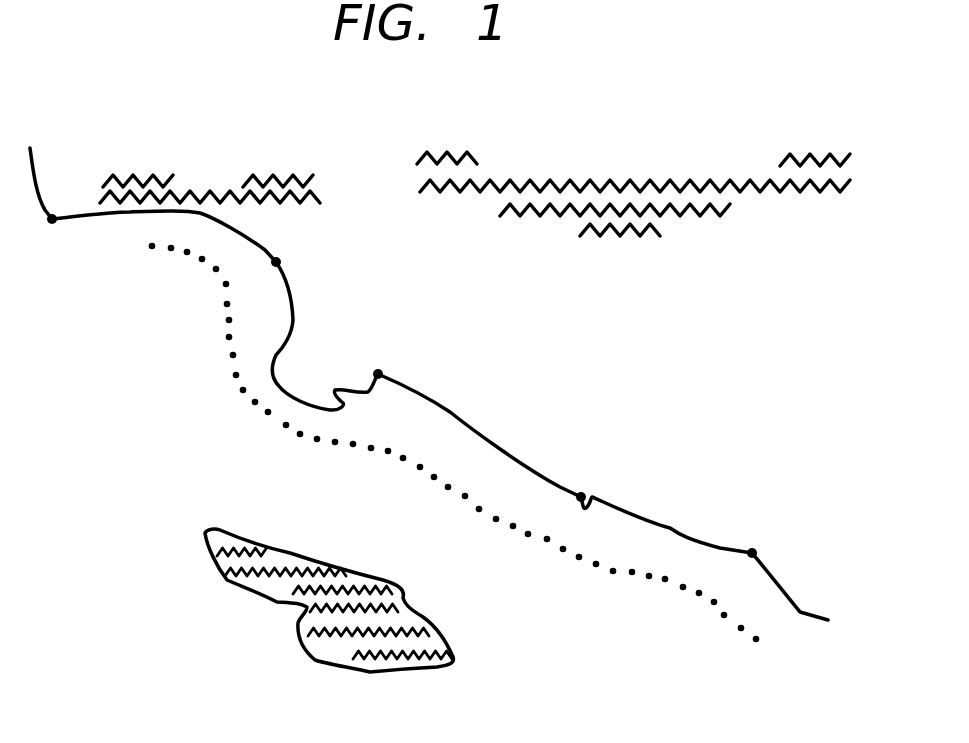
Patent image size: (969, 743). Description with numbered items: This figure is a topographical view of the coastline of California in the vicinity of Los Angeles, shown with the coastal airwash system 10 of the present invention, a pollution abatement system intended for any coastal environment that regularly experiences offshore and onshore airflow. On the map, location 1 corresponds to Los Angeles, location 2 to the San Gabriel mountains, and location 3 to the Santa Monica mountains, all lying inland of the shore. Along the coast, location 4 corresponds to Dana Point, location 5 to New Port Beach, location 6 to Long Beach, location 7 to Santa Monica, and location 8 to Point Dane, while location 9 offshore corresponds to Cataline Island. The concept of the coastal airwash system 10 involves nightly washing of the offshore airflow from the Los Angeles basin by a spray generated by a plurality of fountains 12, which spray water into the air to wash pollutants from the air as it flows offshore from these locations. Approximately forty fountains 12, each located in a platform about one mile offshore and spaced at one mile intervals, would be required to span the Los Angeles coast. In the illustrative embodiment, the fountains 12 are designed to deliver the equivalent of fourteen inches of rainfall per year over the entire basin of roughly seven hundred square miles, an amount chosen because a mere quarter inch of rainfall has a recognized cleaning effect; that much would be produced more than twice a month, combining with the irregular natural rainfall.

The location 1 is at (648, 312).
The location 2 is at (590, 186).
The location 3 is at (262, 181).
The location 4 is at (752, 553).
The location 5 is at (581, 497).
The location 6 is at (378, 374).
The location 7 is at (278, 262).
The location 8 is at (52, 221).
The location 9 is at (407, 602).
The coastal airwash system 10 is at (248, 410).
The fountains 12 is at (241, 390).